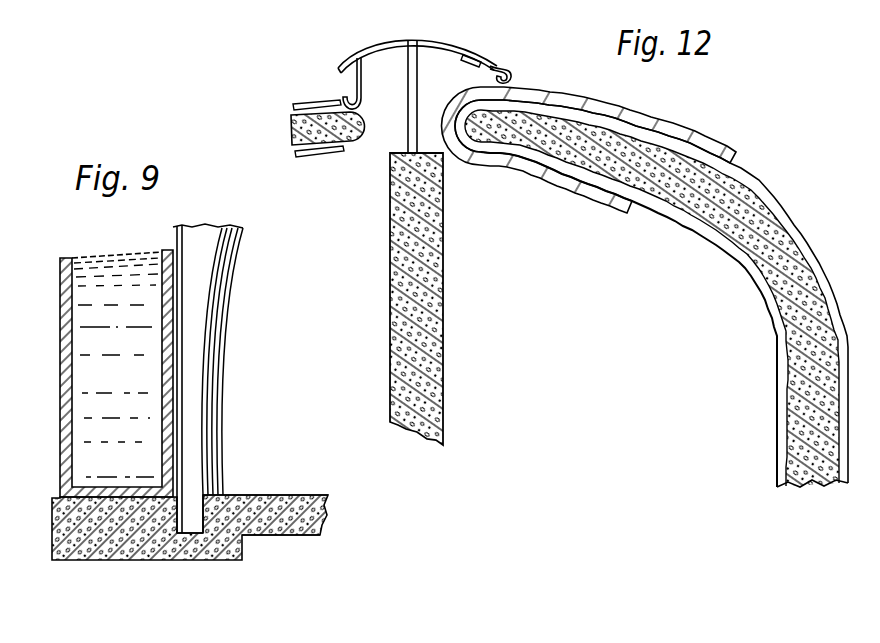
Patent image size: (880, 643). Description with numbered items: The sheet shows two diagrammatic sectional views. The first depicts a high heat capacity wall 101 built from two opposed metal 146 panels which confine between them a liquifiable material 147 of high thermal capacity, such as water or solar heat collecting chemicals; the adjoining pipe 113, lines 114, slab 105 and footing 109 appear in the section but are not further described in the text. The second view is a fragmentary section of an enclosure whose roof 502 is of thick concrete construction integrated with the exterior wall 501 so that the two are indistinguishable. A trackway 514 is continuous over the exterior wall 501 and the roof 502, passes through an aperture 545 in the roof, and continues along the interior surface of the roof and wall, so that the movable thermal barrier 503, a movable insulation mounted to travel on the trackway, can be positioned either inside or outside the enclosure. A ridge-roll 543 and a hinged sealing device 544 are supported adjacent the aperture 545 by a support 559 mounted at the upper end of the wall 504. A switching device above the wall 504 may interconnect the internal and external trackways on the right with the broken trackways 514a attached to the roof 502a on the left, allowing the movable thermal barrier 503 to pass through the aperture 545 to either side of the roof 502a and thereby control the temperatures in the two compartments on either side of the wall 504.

In FIG. 9, the high heat capacity wall 101 is at (110, 250).
In FIG. 9, the metal 146 is at (61, 258).
In FIG. 9, the liquifiable material 147 is at (128, 387).
In FIG. 9, the pipe 113 is at (182, 353).
In FIG. 9, the bundled lines 114 is at (223, 292).
In FIG. 9, the slab 105 is at (298, 495).
In FIG. 9, the footing 109 is at (243, 553).
In FIG. 12, the ridge-roll 543 is at (468, 48).
In FIG. 12, the support 559 is at (407, 65).
In FIG. 12, the hinged sealing device 544 is at (492, 68).
In FIG. 12, the trackways 514a is at (293, 107).
In FIG. 12, the roof 502a is at (341, 142).
In FIG. 12, the wall 504 is at (441, 340).
In FIG. 12, the aperture 545 is at (378, 143).
In FIG. 12, the exterior wall 501 is at (790, 416).
In FIG. 12, the roof 502 is at (675, 162).
In FIG. 12, the trackway 514 is at (703, 230).
In FIG. 12, the movable thermal barrier 503 is at (596, 97).